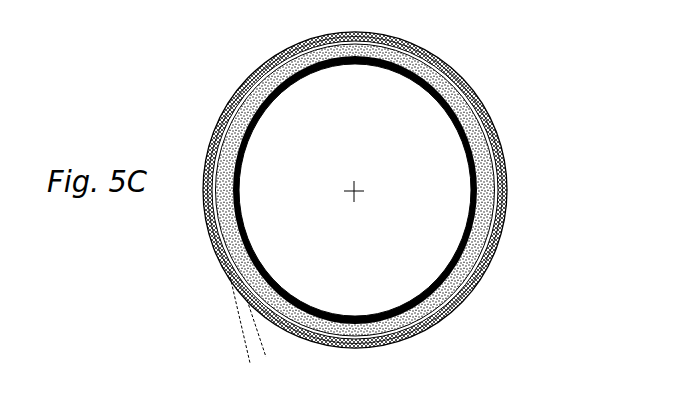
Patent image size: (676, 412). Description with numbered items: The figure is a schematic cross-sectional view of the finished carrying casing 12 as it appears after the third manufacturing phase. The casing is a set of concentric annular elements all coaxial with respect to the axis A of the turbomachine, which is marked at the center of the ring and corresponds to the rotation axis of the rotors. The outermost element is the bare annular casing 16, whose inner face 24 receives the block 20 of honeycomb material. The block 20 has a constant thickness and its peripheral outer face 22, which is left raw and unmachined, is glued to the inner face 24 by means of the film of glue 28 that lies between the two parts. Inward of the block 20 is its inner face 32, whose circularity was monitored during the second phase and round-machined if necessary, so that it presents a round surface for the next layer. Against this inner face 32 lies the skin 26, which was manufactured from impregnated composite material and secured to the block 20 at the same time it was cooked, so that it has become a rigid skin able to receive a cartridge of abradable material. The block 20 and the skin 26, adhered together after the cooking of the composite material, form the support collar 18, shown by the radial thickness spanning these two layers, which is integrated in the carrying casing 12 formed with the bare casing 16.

The carrying casing 12 is at (518, 60).
The bare annular casing 16 is at (502, 158).
The support collar 18 is at (282, 353).
The block of honeycomb material 20 is at (485, 120).
The outer face of the block 22 is at (386, 44).
The inner face of the bare annular casing 24 is at (448, 67).
The skin 26 is at (445, 266).
The film of glue 28 is at (243, 90).
The inner face of the block 32 is at (484, 219).
The axis A is at (358, 196).